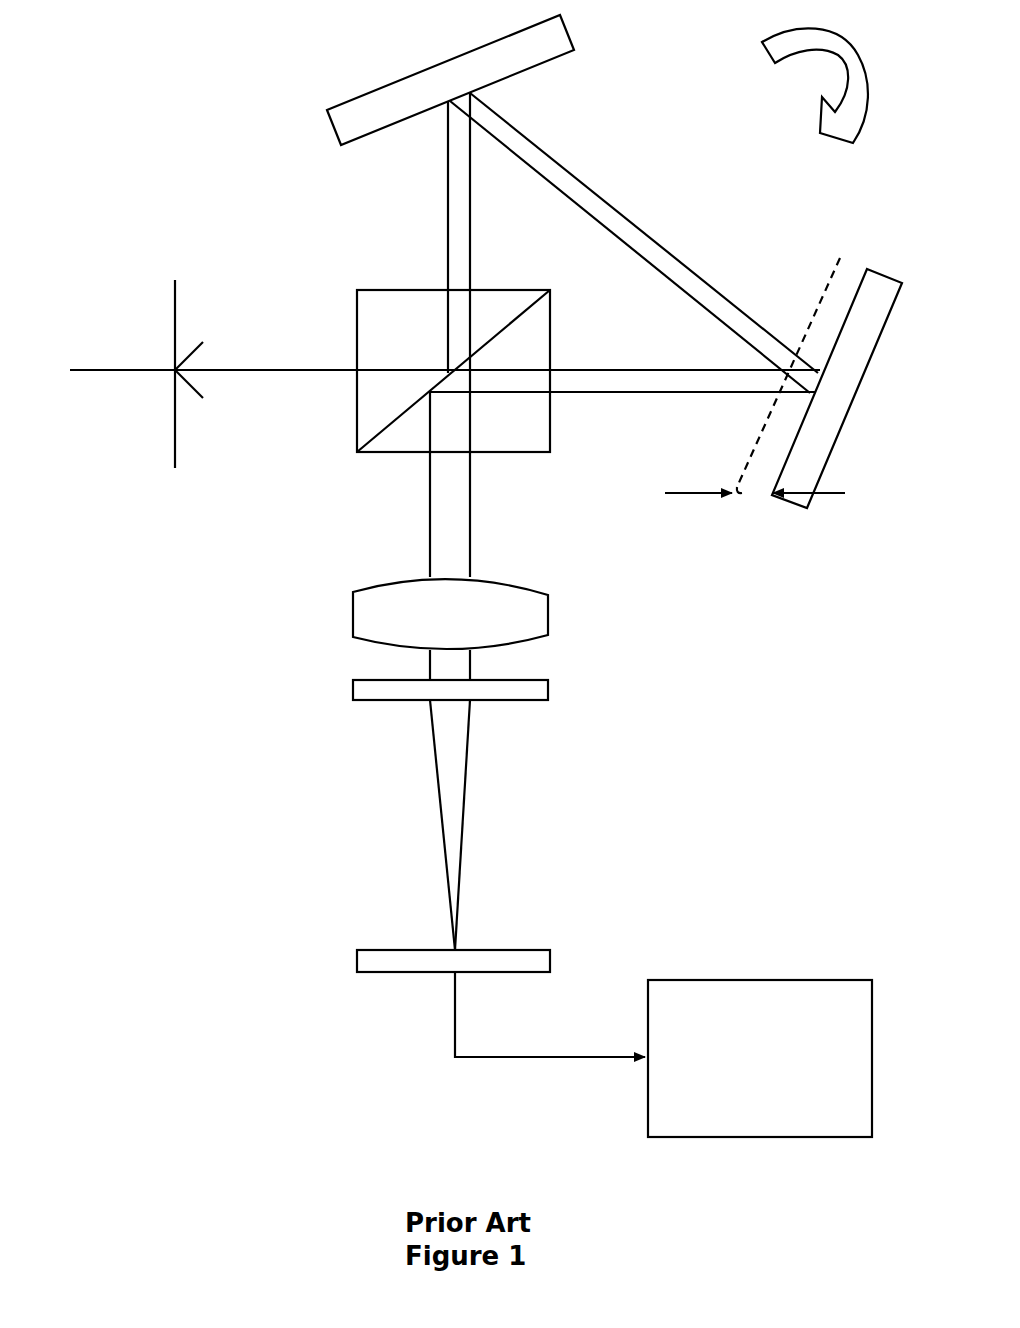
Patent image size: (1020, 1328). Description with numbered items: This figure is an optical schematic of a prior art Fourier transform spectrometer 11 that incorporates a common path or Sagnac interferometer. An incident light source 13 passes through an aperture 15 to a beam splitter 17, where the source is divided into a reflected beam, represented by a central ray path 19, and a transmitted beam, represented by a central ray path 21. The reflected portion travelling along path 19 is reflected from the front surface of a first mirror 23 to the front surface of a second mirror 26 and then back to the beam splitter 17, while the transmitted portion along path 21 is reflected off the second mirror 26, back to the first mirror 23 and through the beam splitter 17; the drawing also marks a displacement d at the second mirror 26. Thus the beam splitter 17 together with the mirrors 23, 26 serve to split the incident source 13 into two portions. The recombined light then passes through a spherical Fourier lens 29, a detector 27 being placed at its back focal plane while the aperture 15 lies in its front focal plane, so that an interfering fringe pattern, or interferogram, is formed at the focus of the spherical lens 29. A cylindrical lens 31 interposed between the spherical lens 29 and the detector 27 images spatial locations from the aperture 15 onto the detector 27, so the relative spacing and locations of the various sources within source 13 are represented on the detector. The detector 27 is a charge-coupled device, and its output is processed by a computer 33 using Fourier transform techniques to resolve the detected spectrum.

The Fourier transform spectrometer 11 is at (795, 85).
The incident light source 13 is at (104, 368).
The aperture 15 is at (178, 300).
The beam splitter 17 is at (352, 421).
The central ray path 19 is at (445, 185).
The central ray path 21 is at (545, 147).
The first mirror 23 is at (363, 88).
The test mirror 26 is at (873, 375).
The displacement distance d is at (755, 385).
The detector 27 is at (354, 957).
The spherical lens 29 is at (350, 610).
The cylindrical lens 31 is at (350, 693).
The computer 33 is at (745, 977).